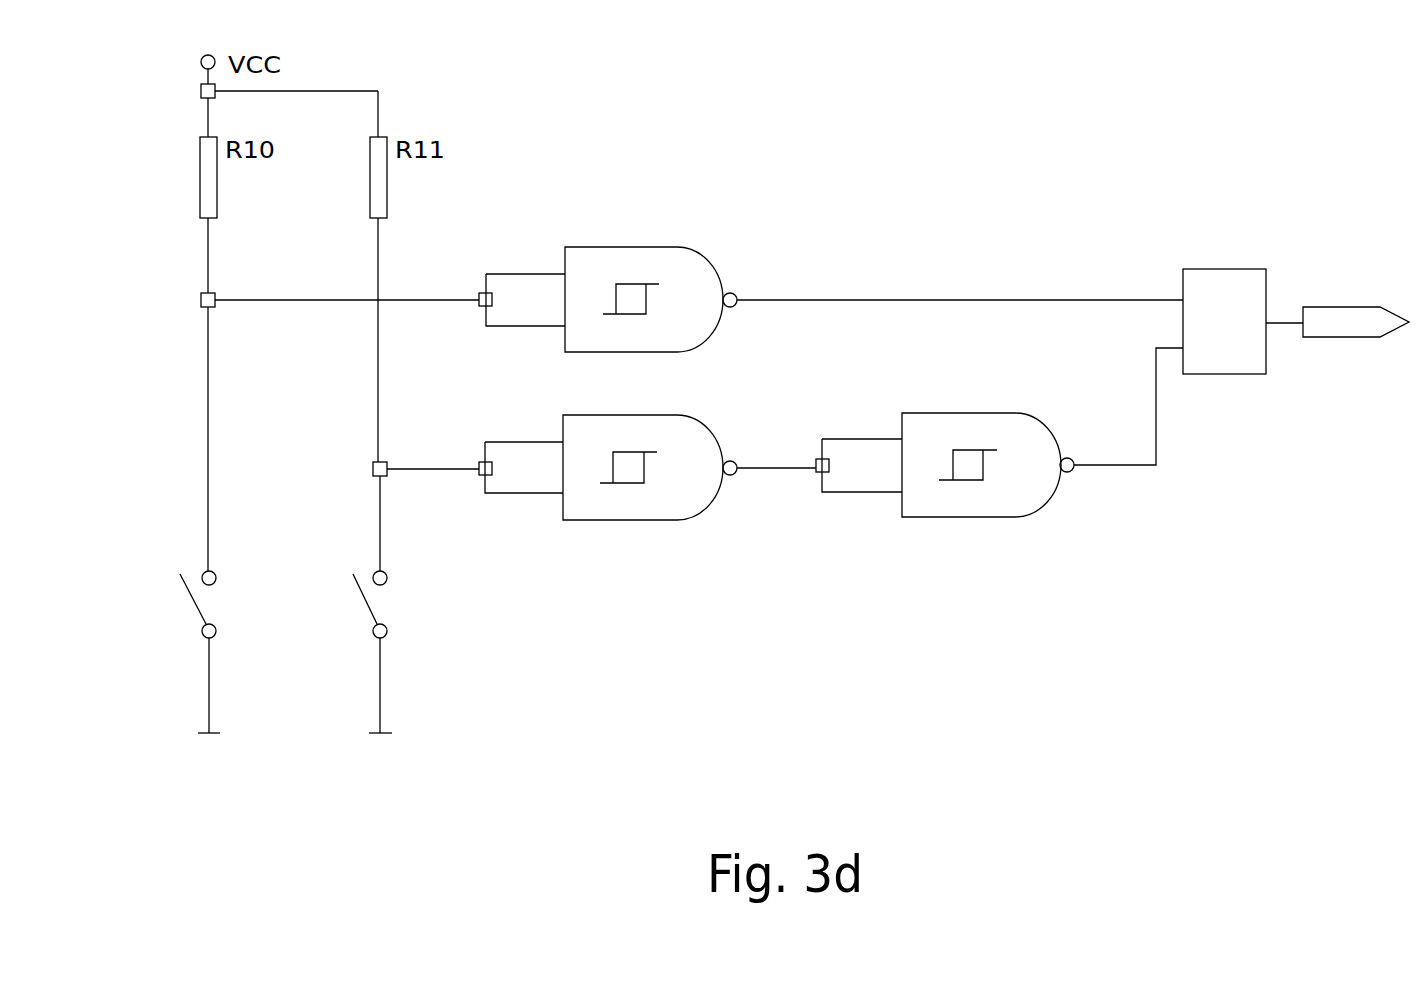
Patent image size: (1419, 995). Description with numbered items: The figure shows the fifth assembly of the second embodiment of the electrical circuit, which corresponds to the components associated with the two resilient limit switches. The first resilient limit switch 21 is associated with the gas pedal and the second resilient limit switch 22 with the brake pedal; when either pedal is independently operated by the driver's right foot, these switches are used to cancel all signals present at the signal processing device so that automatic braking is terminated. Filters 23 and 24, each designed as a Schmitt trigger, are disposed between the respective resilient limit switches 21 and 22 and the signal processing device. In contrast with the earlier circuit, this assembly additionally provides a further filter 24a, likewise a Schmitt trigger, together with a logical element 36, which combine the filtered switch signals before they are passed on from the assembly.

The first resilient limit switch 21 is at (208, 608).
The second resilient limit switch 22 is at (385, 609).
The filter 23 is at (683, 268).
The filter 24 is at (681, 437).
The further filter 24a is at (1020, 435).
The logical element 36 is at (1250, 277).